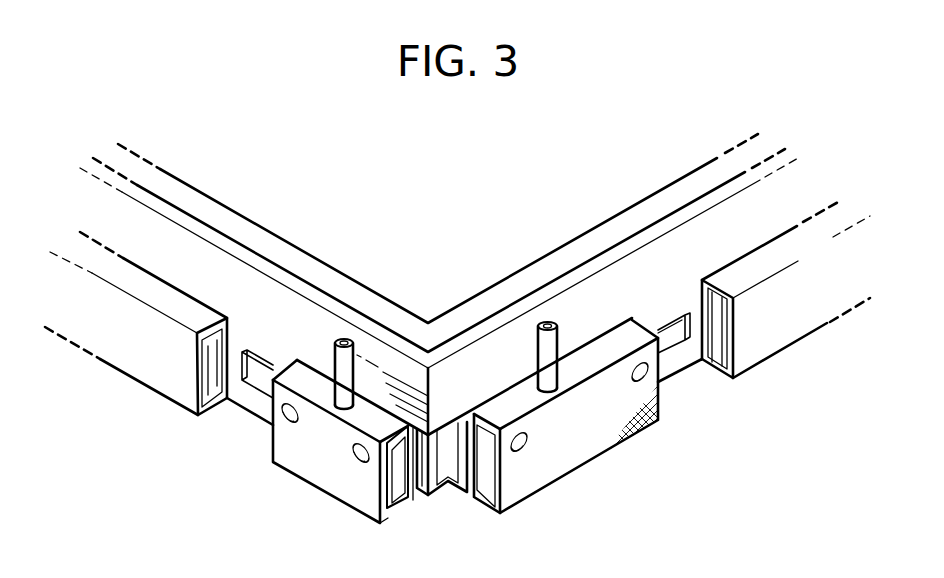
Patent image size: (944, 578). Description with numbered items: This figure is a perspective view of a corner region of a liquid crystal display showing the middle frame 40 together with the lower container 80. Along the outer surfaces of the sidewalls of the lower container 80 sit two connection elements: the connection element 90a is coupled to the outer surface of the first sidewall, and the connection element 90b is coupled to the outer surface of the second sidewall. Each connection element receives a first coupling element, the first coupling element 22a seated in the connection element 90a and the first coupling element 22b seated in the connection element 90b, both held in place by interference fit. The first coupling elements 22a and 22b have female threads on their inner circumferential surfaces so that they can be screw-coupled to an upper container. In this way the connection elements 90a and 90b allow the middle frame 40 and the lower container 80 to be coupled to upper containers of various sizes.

The middle frame 40 is at (668, 253).
The first coupling element 22a is at (341, 361).
The first coupling element 22b is at (545, 358).
The lower container 80 is at (228, 435).
The connection element 90a is at (366, 497).
The connection element 90b is at (520, 482).